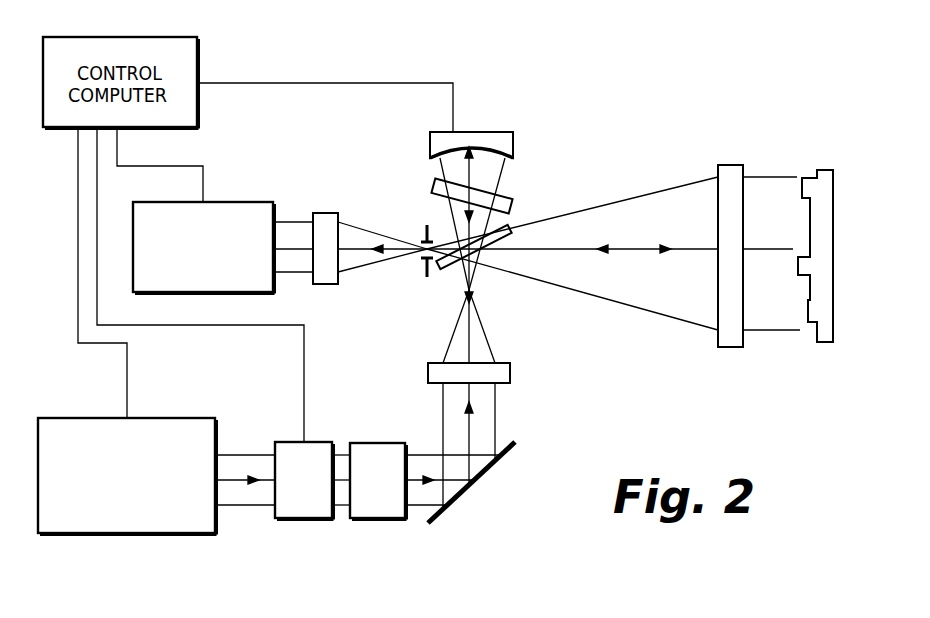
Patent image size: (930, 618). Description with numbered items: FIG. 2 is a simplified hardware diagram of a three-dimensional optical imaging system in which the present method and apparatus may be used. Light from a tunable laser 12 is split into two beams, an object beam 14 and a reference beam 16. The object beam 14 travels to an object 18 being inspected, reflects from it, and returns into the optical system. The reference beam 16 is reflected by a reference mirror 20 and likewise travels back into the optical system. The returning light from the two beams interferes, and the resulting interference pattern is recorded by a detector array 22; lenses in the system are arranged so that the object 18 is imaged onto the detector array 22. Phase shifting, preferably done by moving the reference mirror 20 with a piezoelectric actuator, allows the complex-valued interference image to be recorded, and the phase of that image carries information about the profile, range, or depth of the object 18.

The tunable laser 12 is at (150, 535).
The object beam 14 is at (612, 163).
The reference beam 16 is at (522, 182).
The object 18 is at (838, 193).
The reference mirror 20 is at (493, 131).
The detector array 22 is at (228, 202).